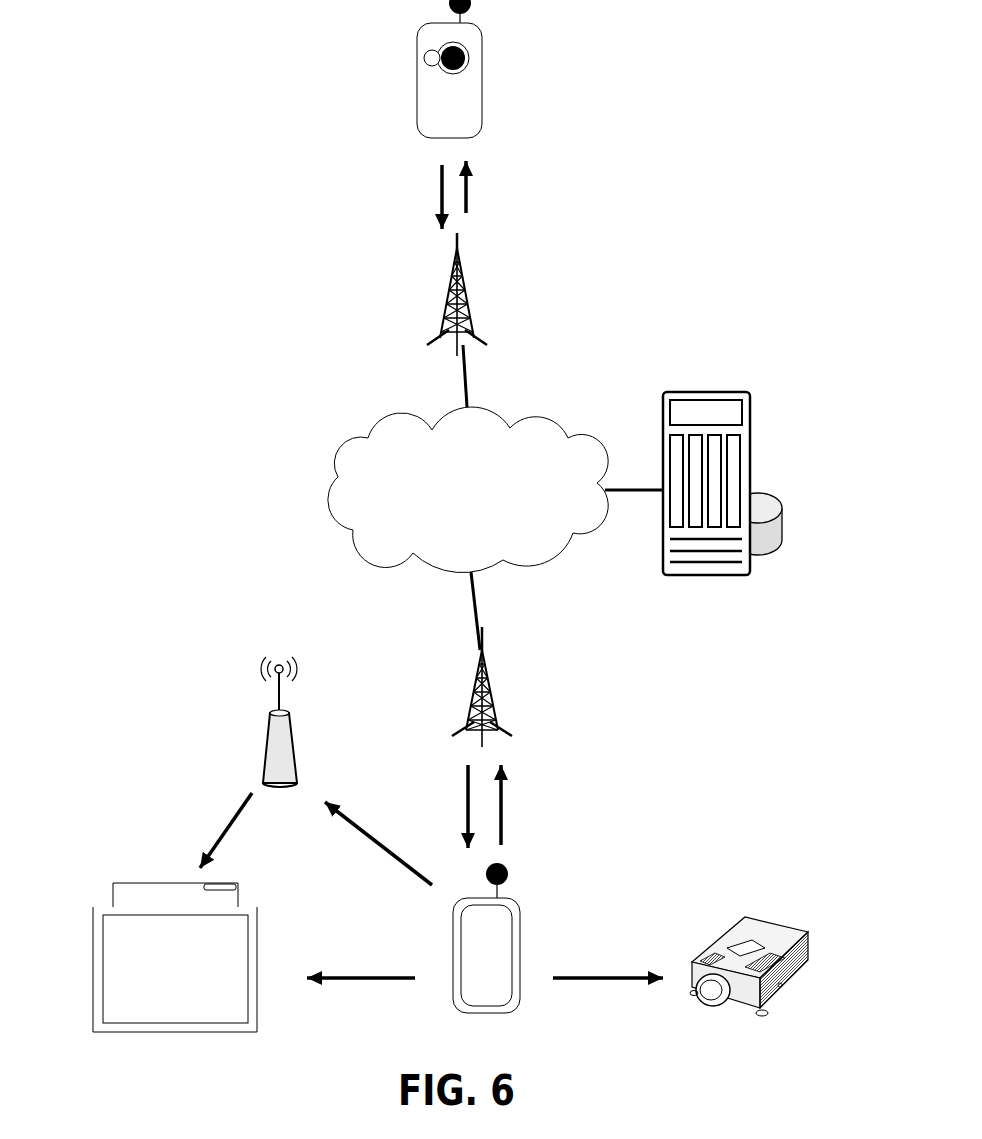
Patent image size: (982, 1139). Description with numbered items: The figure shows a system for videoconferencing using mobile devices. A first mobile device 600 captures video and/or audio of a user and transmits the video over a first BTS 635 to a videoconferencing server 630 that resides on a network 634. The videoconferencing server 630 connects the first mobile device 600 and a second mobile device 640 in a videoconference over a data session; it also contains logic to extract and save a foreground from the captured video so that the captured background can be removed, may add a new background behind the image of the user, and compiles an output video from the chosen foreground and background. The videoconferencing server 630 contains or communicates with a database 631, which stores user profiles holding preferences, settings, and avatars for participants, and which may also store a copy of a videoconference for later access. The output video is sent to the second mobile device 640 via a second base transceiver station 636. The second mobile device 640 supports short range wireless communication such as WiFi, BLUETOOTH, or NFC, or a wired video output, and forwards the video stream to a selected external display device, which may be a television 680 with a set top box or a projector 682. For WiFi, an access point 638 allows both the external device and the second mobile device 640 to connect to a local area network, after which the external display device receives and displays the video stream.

The first mobile device 600 is at (418, 68).
The first BTS 635 is at (446, 300).
The network 634 is at (375, 427).
The videoconferencing server 630 is at (683, 391).
The database 631 is at (767, 505).
The second base transceiver station 636 is at (494, 675).
The access point 638 is at (265, 748).
The television 680 is at (172, 893).
The second mobile device 640 is at (452, 952).
The projector 682 is at (728, 924).